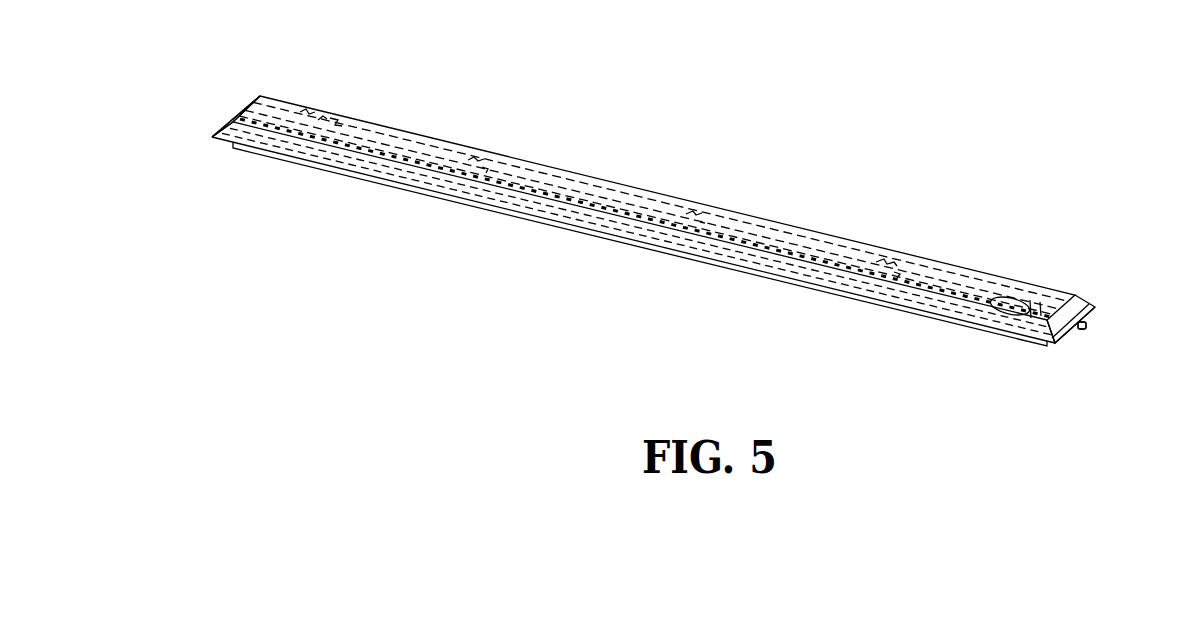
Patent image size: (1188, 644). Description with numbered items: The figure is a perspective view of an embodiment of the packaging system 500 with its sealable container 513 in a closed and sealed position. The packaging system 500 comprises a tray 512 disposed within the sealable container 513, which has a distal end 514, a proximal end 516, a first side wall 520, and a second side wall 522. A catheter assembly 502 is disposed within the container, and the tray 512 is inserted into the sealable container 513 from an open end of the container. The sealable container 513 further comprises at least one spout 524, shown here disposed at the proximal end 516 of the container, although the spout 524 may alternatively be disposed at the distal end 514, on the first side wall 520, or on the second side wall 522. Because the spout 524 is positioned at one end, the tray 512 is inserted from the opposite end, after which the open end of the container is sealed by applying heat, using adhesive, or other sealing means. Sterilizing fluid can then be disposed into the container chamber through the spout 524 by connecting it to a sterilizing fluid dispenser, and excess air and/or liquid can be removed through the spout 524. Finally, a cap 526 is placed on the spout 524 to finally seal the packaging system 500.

The packaging system 500 is at (890, 176).
The catheter assembly 502 is at (290, 110).
The tray 512 is at (634, 183).
The sealable container 513 is at (219, 155).
The distal end 514 is at (230, 124).
The proximal end 516 is at (1068, 336).
The first side wall 520 is at (447, 152).
The second side wall 522 is at (533, 218).
The spout 524 is at (1107, 326).
The cap 526 is at (1086, 331).